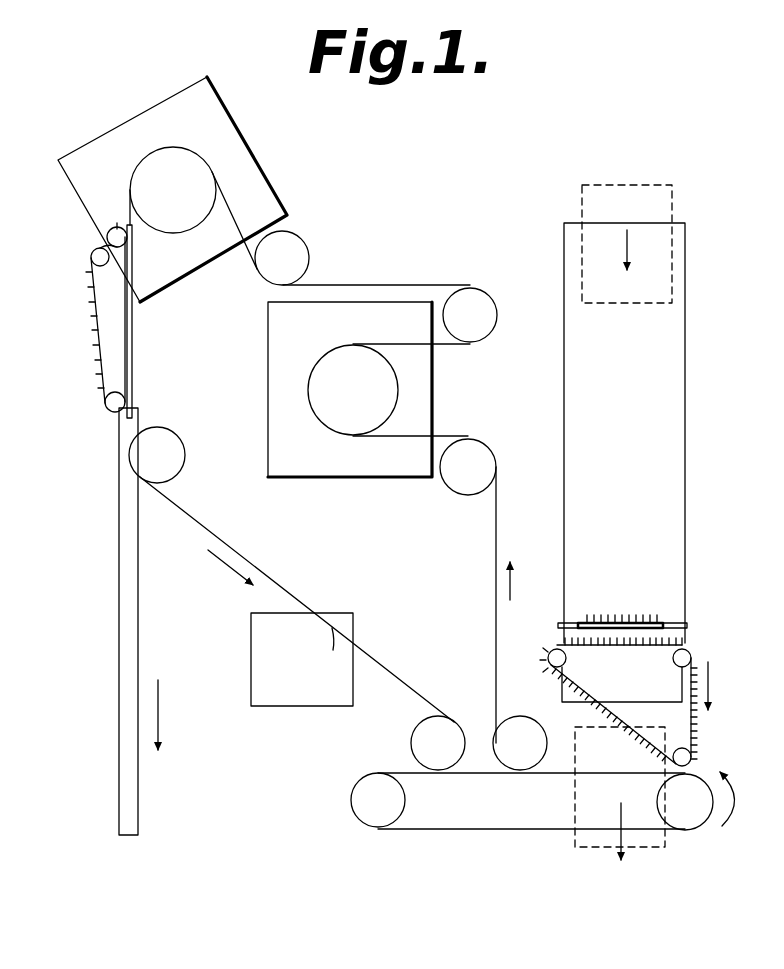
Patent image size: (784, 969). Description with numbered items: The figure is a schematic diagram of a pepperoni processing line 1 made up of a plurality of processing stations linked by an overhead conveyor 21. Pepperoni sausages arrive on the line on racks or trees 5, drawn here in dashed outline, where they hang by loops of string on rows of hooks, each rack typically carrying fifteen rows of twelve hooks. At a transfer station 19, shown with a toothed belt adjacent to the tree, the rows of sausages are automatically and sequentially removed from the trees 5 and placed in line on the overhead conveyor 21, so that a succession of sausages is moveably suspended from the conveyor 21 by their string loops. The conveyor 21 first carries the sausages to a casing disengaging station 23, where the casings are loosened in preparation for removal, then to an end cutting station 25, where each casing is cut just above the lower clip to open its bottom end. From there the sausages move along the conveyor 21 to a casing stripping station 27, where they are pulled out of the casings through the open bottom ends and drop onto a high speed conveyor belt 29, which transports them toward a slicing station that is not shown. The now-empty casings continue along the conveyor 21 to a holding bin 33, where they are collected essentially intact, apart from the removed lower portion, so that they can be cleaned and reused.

The pepperoni processing line 1 is at (552, 108).
The racks or trees 5 is at (615, 185).
The transfer station 19 is at (704, 637).
The overhead conveyor 21 is at (485, 570).
The casing disengaging station 23 is at (432, 383).
The end cutting station 25 is at (243, 138).
The casing stripping station 27 is at (133, 330).
The high speed conveyor belt 29 is at (108, 495).
The holding bin 33 is at (251, 656).